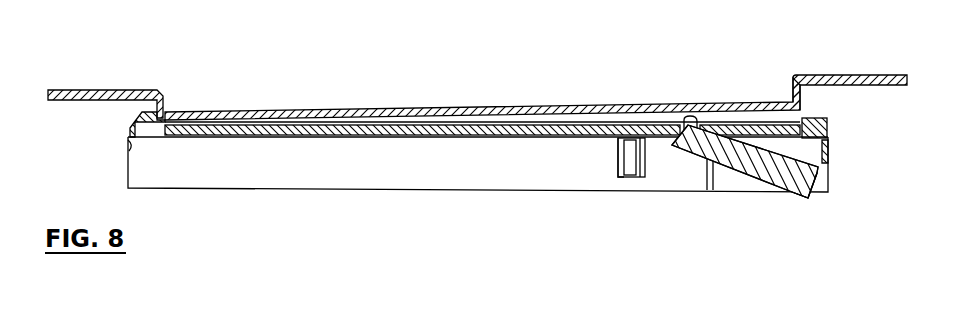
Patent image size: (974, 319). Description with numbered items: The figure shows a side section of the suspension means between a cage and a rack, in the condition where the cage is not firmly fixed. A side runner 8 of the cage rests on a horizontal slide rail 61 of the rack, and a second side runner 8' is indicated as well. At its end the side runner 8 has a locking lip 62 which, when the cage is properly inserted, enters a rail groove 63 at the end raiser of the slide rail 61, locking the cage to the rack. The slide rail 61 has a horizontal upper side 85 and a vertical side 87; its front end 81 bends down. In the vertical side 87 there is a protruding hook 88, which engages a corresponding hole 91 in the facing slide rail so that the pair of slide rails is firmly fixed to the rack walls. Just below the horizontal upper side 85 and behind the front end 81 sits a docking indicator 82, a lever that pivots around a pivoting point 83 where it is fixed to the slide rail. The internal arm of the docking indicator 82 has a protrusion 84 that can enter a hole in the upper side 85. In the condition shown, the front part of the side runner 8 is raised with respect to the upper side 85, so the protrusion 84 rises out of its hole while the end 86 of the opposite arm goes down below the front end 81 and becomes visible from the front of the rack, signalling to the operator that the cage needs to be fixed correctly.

The side runner 8 is at (482, 87).
The flange of plate 8' is at (493, 94).
The slide rail 61 is at (385, 180).
The locking lip 62 is at (803, 92).
The rail groove 63 is at (827, 117).
The front end 81 is at (128, 138).
The docking indicator 82 is at (745, 168).
The pivoting point 83 is at (705, 155).
The protrusion 84 is at (680, 117).
The horizontal upper side 85 is at (513, 133).
The end of the opposite arm 86 is at (813, 200).
The vertical side 87 is at (307, 168).
The protruding hook 88 is at (647, 172).
The hole 91 is at (617, 169).